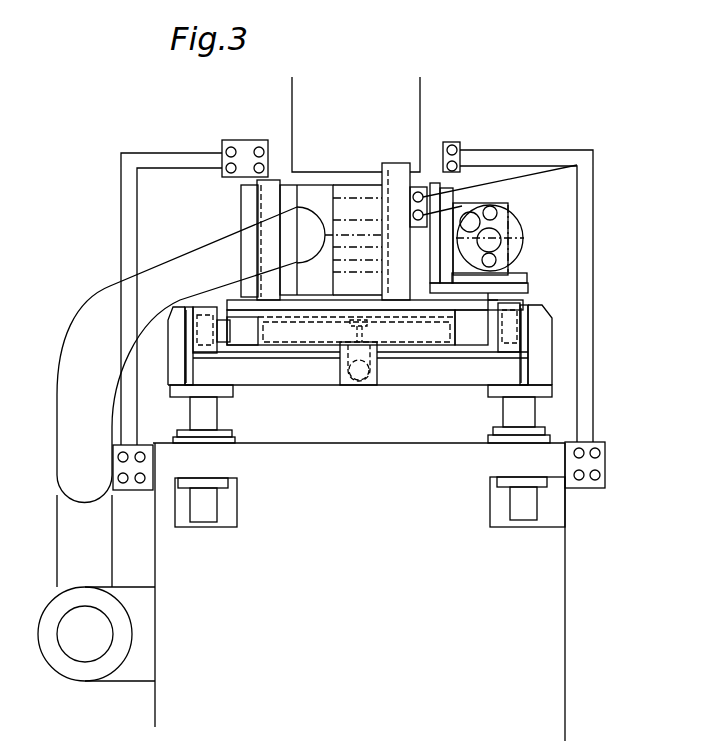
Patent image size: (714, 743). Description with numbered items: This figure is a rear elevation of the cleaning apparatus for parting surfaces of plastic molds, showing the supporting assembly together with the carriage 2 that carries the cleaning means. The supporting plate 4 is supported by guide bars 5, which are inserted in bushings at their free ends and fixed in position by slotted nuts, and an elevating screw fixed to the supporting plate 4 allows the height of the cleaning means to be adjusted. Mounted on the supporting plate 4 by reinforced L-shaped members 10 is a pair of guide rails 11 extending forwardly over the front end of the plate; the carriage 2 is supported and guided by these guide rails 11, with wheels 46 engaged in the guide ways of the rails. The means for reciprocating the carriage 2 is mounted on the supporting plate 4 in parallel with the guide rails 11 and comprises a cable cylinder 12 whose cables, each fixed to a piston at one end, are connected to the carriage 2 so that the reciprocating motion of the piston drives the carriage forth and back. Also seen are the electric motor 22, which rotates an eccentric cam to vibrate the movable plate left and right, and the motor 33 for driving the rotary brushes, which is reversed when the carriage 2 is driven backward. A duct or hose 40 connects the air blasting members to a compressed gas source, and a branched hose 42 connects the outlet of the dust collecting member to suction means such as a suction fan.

The carriage 2 is at (475, 333).
The supporting plate 4 is at (419, 388).
The guide bars 5 is at (205, 413).
The reinforced L-shaped members 10 is at (192, 368).
The guide rails 11 is at (205, 348).
The cable cylinder 12 is at (375, 372).
The electric motor 22 is at (403, 177).
The motor 33 is at (513, 238).
The duct or hose 40 is at (129, 183).
The branched hose 42 is at (88, 323).
The wheels 46 is at (206, 316).